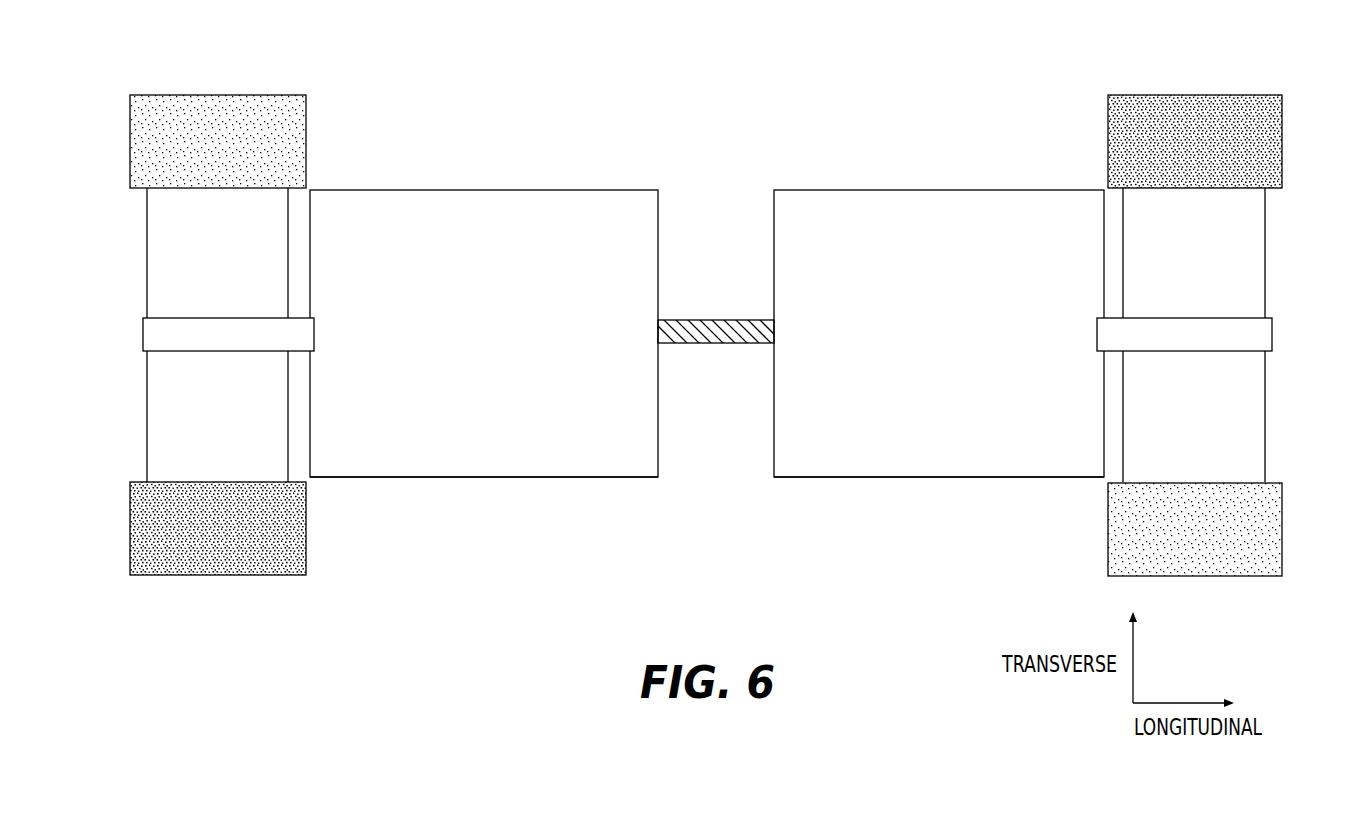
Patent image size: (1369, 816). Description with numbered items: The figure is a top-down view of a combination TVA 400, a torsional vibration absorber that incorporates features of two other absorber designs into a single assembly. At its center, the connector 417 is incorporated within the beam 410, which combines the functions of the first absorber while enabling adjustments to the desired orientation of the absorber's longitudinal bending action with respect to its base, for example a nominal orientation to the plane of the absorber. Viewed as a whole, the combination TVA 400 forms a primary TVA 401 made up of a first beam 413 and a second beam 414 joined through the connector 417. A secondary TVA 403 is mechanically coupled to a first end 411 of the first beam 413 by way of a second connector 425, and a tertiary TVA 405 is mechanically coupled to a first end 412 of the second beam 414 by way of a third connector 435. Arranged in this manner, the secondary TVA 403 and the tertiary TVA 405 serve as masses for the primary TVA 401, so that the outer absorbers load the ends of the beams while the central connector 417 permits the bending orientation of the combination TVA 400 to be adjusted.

The combination TVA 400 is at (711, 297).
The primary TVA 401 is at (706, 326).
The secondary TVA 403 is at (235, 68).
The tertiary TVA 405 is at (1186, 75).
The beam 410 is at (582, 228).
The first end of the first beam 411 is at (341, 163).
The first end of the second beam 412 is at (1031, 182).
The first beam 413 is at (481, 442).
The second beam 414 is at (1015, 442).
The connector 417 is at (735, 320).
The second connector 425 is at (170, 333).
The third connector 435 is at (1255, 334).